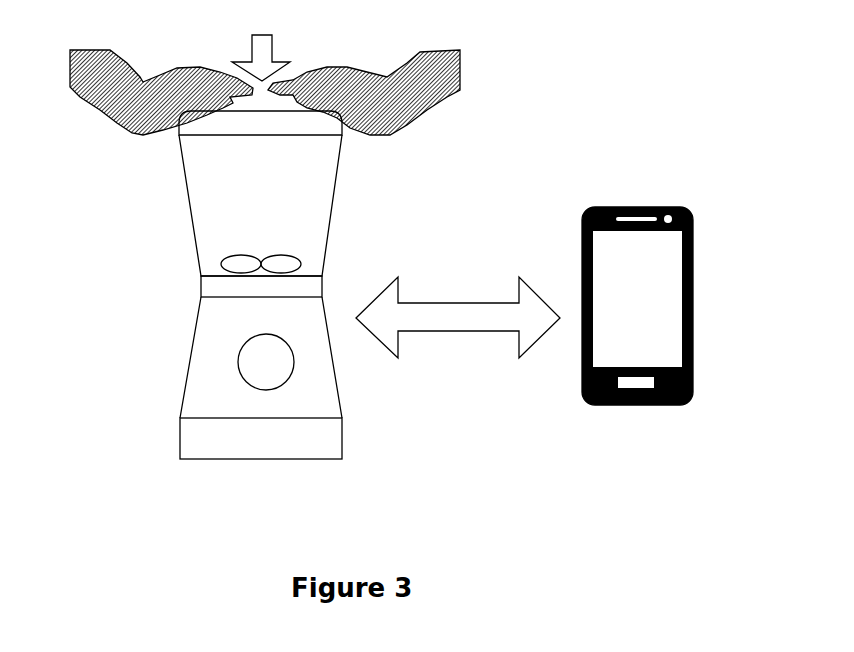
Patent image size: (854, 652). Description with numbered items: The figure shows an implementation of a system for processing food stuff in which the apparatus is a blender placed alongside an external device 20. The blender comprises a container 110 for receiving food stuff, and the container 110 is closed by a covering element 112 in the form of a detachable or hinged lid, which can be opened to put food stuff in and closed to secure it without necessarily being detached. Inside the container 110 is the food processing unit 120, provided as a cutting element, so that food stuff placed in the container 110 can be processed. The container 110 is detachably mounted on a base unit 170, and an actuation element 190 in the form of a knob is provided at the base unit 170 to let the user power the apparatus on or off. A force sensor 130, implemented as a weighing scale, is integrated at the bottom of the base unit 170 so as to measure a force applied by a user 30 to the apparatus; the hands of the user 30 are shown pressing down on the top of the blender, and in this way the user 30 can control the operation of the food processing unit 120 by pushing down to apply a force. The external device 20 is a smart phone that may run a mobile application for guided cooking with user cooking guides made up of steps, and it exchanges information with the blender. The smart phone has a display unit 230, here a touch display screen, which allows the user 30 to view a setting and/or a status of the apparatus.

The user 30 is at (459, 77).
The covering element 112 is at (330, 125).
The container 110 is at (337, 182).
The food processing unit 120 is at (225, 257).
The actuation element 190 is at (239, 351).
The base unit 170 is at (322, 395).
The force sensor 130 is at (193, 435).
The external device 20 is at (660, 276).
The display unit 230 is at (670, 277).